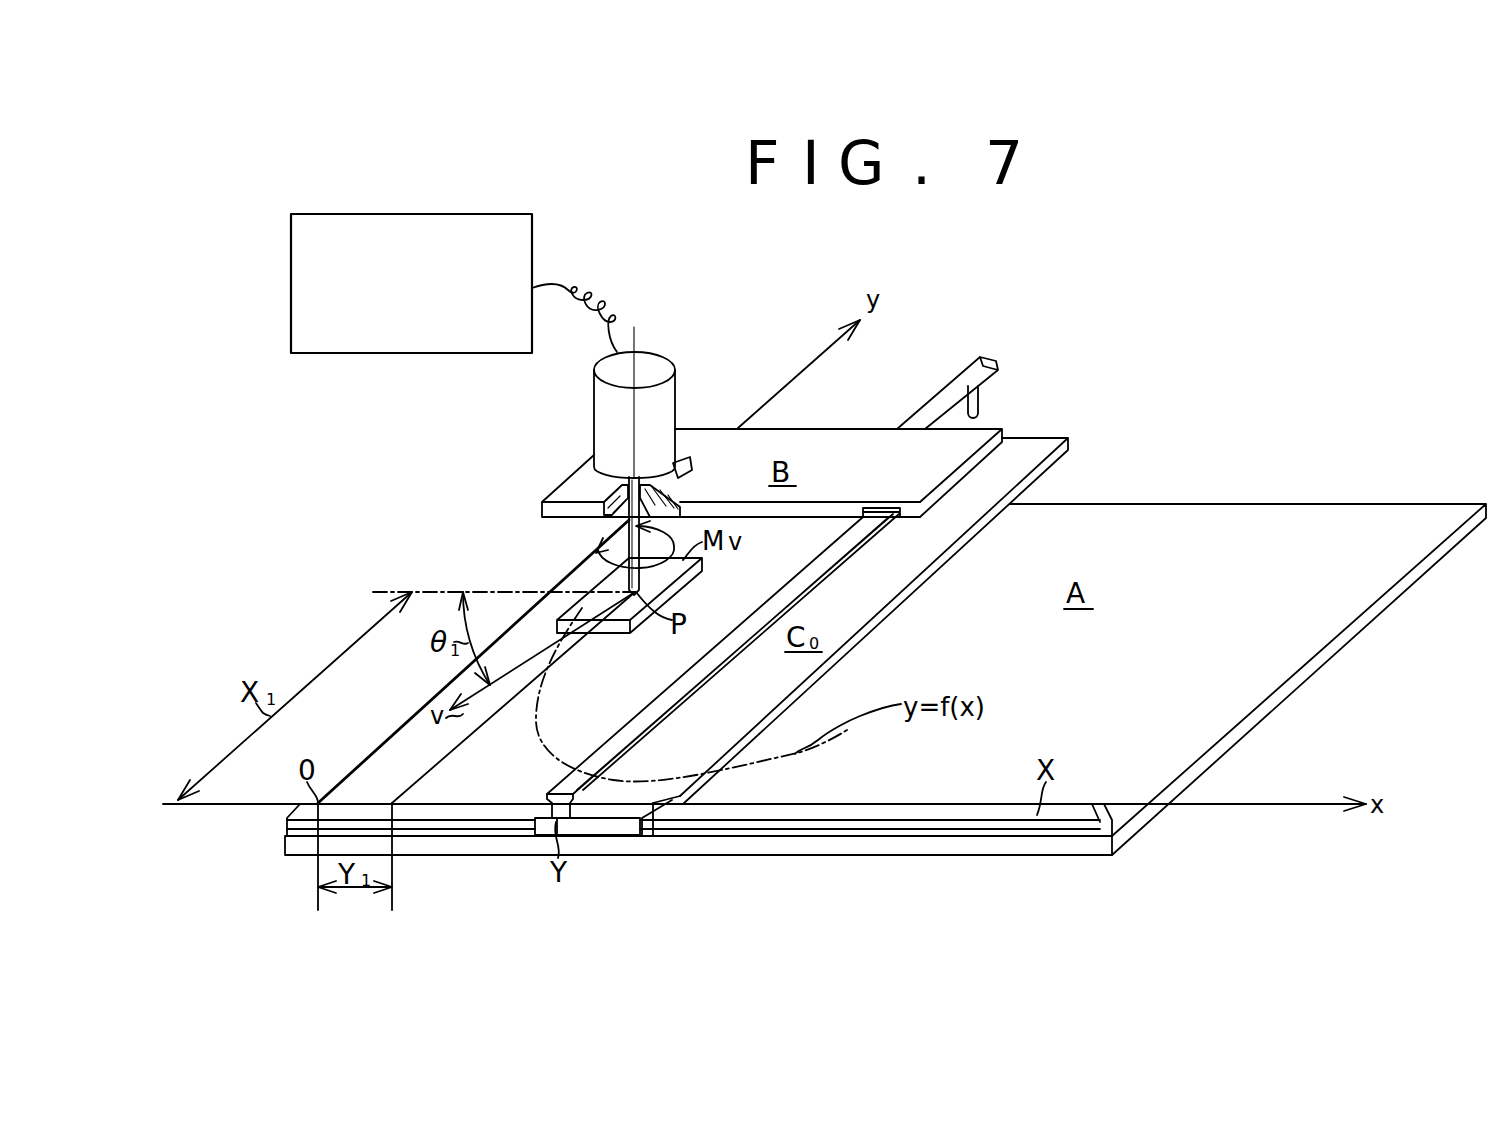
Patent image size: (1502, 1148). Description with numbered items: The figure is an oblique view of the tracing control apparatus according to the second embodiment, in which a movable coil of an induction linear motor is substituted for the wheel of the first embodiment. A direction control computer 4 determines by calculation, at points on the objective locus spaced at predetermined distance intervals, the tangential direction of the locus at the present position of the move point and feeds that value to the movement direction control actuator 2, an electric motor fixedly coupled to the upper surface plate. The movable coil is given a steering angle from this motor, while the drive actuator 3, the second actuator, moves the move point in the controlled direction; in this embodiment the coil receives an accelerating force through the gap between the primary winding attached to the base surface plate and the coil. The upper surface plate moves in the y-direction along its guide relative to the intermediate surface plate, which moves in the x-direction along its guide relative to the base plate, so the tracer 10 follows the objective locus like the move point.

The movement direction control actuator 2 is at (643, 378).
The drive actuator 3 is at (585, 536).
The direction control computer 4 is at (430, 283).
The tracer 10 is at (975, 372).